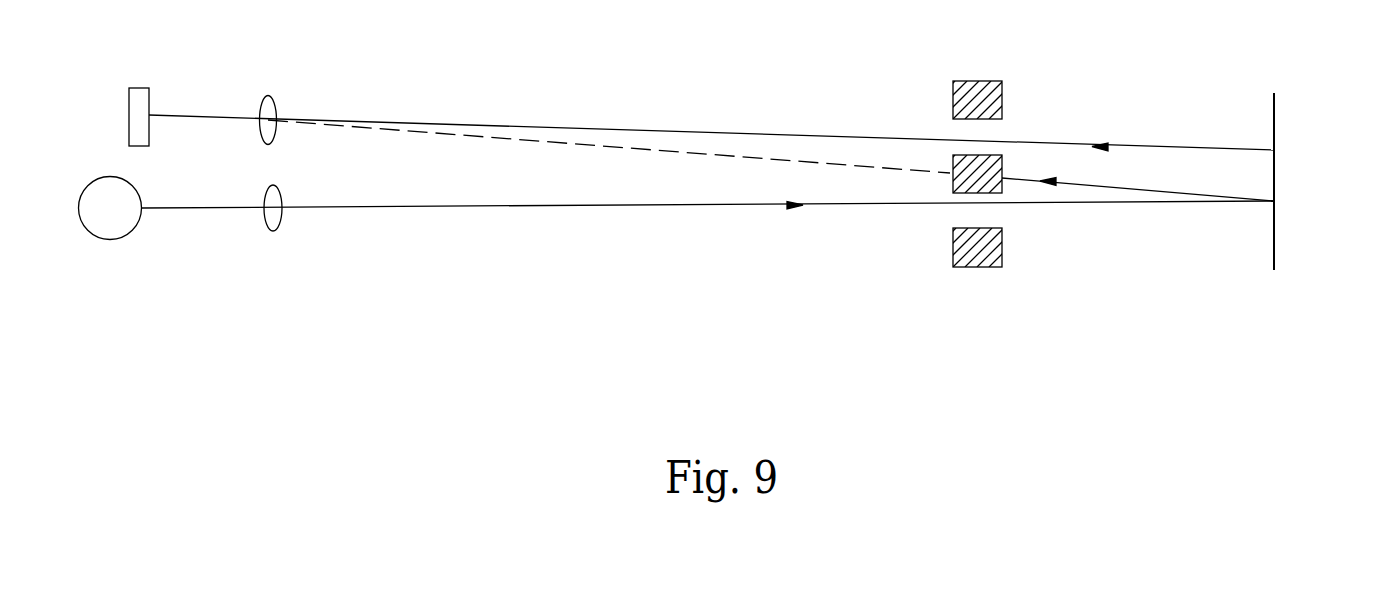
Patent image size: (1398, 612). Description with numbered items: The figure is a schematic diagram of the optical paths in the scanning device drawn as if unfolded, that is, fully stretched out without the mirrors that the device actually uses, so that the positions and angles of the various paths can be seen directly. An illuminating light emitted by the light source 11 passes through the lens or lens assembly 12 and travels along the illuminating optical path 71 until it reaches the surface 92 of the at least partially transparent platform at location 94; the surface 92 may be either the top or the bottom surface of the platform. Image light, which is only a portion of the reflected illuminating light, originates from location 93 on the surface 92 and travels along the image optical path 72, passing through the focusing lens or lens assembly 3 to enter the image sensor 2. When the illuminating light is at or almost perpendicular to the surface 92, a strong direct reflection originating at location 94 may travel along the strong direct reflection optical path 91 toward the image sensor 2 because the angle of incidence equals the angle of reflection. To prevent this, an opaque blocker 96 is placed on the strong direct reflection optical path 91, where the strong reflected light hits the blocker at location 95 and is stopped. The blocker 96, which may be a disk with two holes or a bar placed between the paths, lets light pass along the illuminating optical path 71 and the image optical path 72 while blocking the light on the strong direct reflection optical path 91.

The image sensor 2 is at (140, 88).
The focusing lens or lens assembly 3 is at (273, 98).
The light source 11 is at (125, 237).
The lens or lens assembly 12 is at (275, 231).
The illuminating optical path 71 is at (592, 205).
The image optical path 72 is at (627, 132).
The strong direct reflection optical path 91 is at (1128, 188).
The surface of the at least partially transparent platform 92 is at (1274, 109).
The location on the surface 93 is at (1276, 150).
The location on the surface 94 is at (1276, 201).
The location on the blocker 95 is at (1002, 163).
The blocker 96 is at (965, 167).